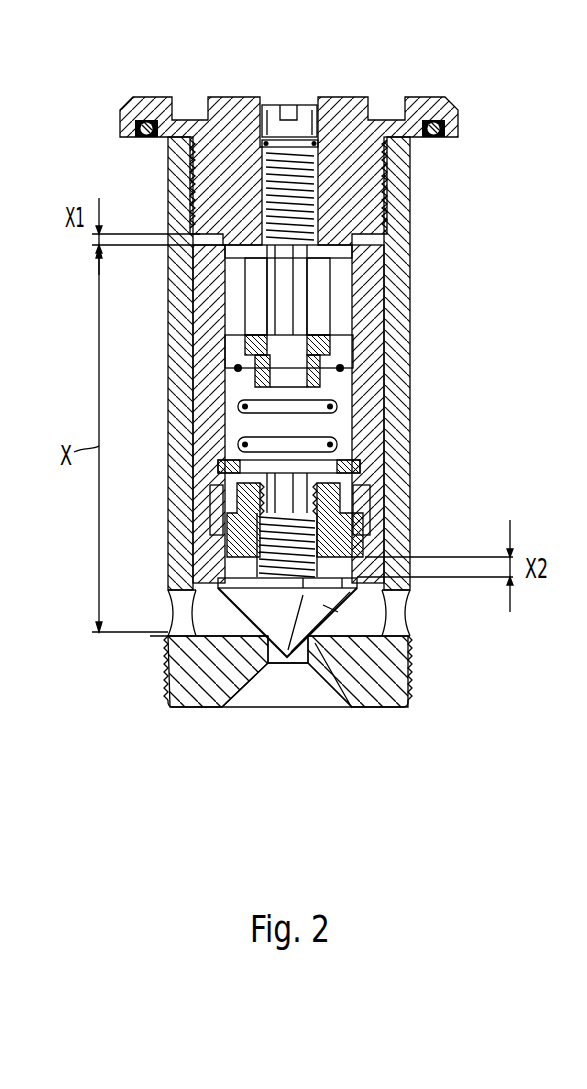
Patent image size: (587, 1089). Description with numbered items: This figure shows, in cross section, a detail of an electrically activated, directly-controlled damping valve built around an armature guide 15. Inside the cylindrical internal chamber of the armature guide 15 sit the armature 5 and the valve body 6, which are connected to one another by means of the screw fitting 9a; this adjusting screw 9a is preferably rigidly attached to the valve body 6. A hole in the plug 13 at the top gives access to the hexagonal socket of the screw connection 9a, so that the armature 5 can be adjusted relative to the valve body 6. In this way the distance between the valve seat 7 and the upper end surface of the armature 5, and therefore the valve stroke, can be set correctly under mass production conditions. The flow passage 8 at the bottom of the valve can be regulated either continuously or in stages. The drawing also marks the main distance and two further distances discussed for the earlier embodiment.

The plug 13 is at (338, 150).
The armature 5 is at (362, 276).
The armature guide 15 is at (397, 366).
The screw fitting 9a is at (368, 532).
The valve body 6 is at (368, 645).
The valve seat 7 is at (348, 708).
The flow passage 8 is at (295, 690).